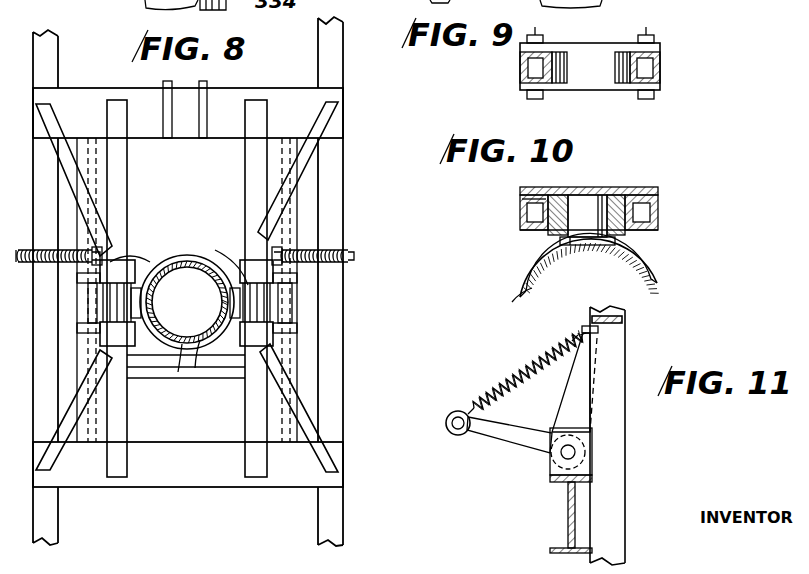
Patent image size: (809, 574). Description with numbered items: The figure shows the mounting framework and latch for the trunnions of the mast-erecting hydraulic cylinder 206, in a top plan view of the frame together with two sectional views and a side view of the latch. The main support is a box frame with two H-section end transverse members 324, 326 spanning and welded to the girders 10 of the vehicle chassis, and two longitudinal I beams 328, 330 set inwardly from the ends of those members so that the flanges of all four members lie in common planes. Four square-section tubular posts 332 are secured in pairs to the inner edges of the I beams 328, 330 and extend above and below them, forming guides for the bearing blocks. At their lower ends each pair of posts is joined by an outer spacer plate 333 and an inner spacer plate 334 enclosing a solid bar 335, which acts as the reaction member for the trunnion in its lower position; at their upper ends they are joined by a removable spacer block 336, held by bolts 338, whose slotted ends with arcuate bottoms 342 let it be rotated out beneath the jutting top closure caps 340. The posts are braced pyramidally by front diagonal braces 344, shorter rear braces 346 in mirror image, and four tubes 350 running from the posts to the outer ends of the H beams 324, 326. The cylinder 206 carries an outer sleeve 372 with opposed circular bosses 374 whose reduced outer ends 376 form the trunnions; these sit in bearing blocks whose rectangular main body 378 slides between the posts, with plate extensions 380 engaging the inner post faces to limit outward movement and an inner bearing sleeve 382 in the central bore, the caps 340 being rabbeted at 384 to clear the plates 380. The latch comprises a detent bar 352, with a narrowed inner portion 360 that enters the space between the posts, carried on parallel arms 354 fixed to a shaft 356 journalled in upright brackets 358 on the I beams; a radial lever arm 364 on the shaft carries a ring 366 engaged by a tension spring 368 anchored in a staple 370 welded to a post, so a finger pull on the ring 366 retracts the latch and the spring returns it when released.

In FIG. 8, the girders 10 is at (50, 70).
In FIG. 8, the hydraulic cylinder 206 is at (178, 372).
In FIG. 10, the hydraulic cylinder 206 is at (516, 298).
In FIG. 8, the transverse member 324 is at (232, 88).
In FIG. 8, the transverse member 326 is at (220, 487).
In FIG. 8, the I beam 328 is at (92, 156).
In FIG. 8, the I beam 330 is at (282, 152).
In FIG. 11, the I beam 330 is at (568, 512).
In FIG. 9, the tubular posts 332 is at (520, 68).
In FIG. 10, the tubular posts 332 is at (520, 212).
In FIG. 10, the outer spacer plate 333 is at (655, 188).
In FIG. 10, the inner spacer plate 334 is at (528, 230).
In FIG. 10, the solid bar 335 is at (630, 187).
In FIG. 9, the spacer block 336 is at (600, 50).
In FIG. 9, the bolts 338 is at (534, 34).
In FIG. 8, the top closure caps 340 is at (246, 262).
In FIG. 9, the arcuate bottoms 342 is at (560, 52).
In FIG. 8, the diagonal braces 344 is at (253, 422).
In FIG. 8, the diagonal braces 346 is at (244, 174).
In FIG. 8, the tubes 350 is at (62, 132).
In FIG. 11, the detent bar 352 is at (612, 336).
In FIG. 8, the arms 354 is at (292, 320).
In FIG. 11, the arms 354 is at (585, 372).
In FIG. 11, the shaft 356 is at (550, 460).
In FIG. 8, the upright brackets 358 is at (108, 262).
In FIG. 11, the upright brackets 358 is at (592, 460).
In FIG. 8, the narrowed inner portion 360 is at (228, 306).
In FIG. 11, the radial lever arm 364 is at (490, 434).
In FIG. 8, the ring 366 is at (17, 250).
In FIG. 11, the ring 366 is at (450, 434).
In FIG. 8, the tension spring 368 is at (50, 262).
In FIG. 11, the tension spring 368 is at (528, 374).
In FIG. 11, the staple 370 is at (582, 330).
In FIG. 8, the outer sleeve 372 is at (196, 368).
In FIG. 10, the outer sleeve 372 is at (656, 268).
In FIG. 8, the circular bosses 374 is at (228, 292).
In FIG. 10, the circular bosses 374 is at (582, 246).
In FIG. 8, the reduced outer ends 376 is at (189, 322).
In FIG. 10, the reduced outer ends 376 is at (596, 192).
In FIG. 10, the main body 378 is at (524, 204).
In FIG. 10, the plate extensions 380 is at (545, 236).
In FIG. 10, the inner bearing sleeve 382 is at (560, 187).
In FIG. 8, the rabbet 384 is at (140, 262).